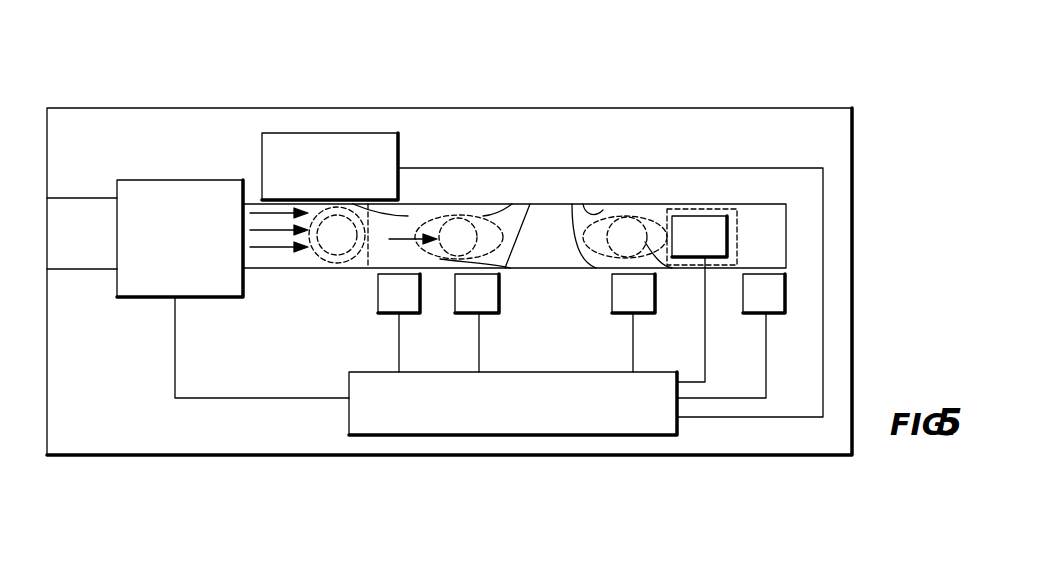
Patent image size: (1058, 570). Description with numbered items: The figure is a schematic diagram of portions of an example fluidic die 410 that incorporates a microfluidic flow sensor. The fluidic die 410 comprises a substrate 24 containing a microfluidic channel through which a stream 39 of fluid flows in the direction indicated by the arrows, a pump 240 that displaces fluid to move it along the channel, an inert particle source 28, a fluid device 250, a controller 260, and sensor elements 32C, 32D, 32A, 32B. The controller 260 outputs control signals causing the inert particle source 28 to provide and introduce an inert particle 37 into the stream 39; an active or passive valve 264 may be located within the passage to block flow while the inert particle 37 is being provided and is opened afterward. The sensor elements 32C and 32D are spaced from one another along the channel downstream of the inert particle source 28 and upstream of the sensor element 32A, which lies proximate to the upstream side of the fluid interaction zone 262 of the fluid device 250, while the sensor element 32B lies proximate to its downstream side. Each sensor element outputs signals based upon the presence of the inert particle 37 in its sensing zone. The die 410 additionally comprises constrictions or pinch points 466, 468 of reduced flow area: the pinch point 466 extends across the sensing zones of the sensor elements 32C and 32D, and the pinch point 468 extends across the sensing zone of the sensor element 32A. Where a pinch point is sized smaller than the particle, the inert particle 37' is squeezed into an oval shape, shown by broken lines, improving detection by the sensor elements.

The fluidic die 410 is at (112, 73).
The substrate 24 is at (852, 180).
The pump 240 is at (187, 180).
The stream 39 is at (275, 250).
The inert particle source 28 is at (312, 133).
The inert particle 37 is at (498, 197).
The inert particle 37' is at (504, 215).
The valve 264 is at (397, 216).
The pinch point 466 is at (538, 206).
The pinch point 468 is at (583, 204).
The fluid interaction zone 262 is at (730, 213).
The fluid device 250 is at (738, 245).
The sensor element 32C is at (410, 314).
The sensor element 32D is at (489, 314).
The sensor element 32A is at (648, 314).
The sensor element 32B is at (778, 314).
The controller 260 is at (565, 437).